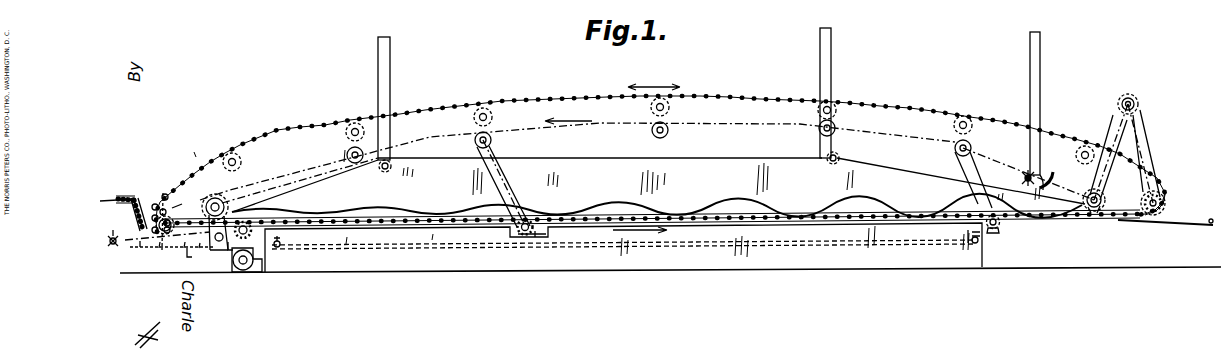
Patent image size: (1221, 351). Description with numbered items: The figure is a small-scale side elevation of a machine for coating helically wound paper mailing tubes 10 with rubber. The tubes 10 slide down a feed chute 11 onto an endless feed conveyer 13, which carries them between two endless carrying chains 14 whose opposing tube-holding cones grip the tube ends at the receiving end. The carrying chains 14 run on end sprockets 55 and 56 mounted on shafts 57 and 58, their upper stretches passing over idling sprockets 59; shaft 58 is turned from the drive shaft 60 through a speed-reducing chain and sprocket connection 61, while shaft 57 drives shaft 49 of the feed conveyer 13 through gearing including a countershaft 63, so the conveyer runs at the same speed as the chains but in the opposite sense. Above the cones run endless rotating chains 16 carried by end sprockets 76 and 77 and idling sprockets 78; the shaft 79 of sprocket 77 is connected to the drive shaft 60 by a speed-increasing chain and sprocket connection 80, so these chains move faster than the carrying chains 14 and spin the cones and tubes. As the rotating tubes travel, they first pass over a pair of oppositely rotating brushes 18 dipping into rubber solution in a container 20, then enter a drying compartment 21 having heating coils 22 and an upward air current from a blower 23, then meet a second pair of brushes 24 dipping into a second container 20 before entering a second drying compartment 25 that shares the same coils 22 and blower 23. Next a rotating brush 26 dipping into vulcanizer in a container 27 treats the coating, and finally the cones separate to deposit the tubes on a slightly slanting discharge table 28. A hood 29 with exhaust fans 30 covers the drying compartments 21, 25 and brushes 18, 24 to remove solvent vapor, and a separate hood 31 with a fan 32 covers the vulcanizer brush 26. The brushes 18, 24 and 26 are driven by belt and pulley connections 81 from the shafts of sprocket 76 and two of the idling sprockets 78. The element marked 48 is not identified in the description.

The tubes 10 is at (115, 198).
The feed chute 11 is at (137, 222).
The endless feed conveyer 13 is at (172, 255).
The endless carrying chains 14 is at (430, 114).
The endless rotating chains 16 is at (627, 123).
The oppositely rotating brushes 18 is at (305, 186).
The container 20 is at (257, 237).
The drying compartment 21 is at (407, 267).
The heating coils 22 is at (485, 249).
The blower 23 is at (249, 271).
The second pair of oppositely rotating brushes 24 is at (540, 223).
The second drying compartment 25 is at (730, 257).
The rotating brush 26 is at (1000, 226).
The container 27 is at (996, 234).
The discharge table 28 is at (1183, 226).
The hood 29 is at (732, 158).
The exhaust fans 30 is at (385, 172).
The hood 31 is at (1049, 172).
The fan 32 is at (1023, 178).
The roller 48 is at (114, 246).
The shaft 49 is at (220, 243).
The end sprocket 55 is at (177, 212).
The end sprocket 56 is at (1165, 203).
The shaft 57 is at (163, 195).
The shaft 58 is at (1162, 208).
The idling sprockets 59 is at (262, 145).
The drive shaft 60 is at (1130, 98).
The speed-reducing chain and sprocket connection 61 is at (1148, 155).
The countershaft 63 is at (160, 233).
The end sprocket 76 is at (216, 198).
The end sprocket 77 is at (1104, 201).
The idling sprockets 78 is at (347, 153).
The shaft 79 is at (1096, 212).
The speed-increasing chain and sprocket connection 80 is at (1115, 117).
The belt and pulley connections 81 is at (507, 178).